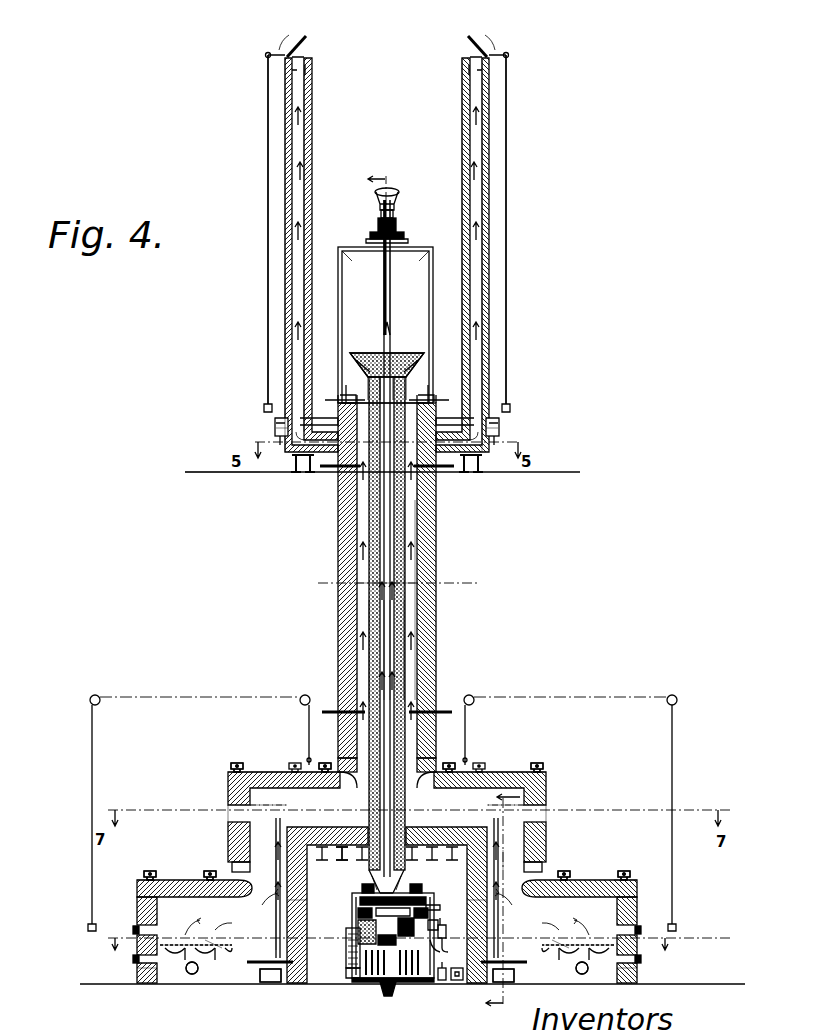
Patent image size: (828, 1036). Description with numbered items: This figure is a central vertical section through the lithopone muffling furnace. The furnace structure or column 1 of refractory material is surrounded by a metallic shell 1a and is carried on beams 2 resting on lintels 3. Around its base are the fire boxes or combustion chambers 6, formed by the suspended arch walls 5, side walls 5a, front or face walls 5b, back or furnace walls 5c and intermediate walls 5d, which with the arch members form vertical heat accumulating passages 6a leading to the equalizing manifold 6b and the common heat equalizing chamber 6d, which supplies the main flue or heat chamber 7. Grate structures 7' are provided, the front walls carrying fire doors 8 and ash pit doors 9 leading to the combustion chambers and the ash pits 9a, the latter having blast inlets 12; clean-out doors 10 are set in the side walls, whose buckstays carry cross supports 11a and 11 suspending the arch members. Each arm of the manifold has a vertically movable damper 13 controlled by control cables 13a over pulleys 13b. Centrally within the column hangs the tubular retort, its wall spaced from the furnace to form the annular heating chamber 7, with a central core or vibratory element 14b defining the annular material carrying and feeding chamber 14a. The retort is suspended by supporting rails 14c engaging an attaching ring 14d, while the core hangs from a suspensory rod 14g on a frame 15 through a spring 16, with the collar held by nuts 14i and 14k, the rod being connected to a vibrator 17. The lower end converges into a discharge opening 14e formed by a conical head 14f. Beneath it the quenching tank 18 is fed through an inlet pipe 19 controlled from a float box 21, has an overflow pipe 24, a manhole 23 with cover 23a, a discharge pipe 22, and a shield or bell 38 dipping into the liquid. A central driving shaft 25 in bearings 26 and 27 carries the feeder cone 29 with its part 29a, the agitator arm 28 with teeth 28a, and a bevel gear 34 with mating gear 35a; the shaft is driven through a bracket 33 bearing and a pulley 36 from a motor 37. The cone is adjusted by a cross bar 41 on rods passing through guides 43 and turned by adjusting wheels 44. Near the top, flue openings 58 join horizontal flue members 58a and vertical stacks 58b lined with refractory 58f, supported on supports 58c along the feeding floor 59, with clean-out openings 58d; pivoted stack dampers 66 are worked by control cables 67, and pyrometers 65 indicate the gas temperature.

The pivoted stack damper 66 is at (296, 40).
The control cable 67 is at (268, 190).
The stack 58b is at (287, 262).
The refractory lining 58f is at (304, 300).
The clean-out opening 58d is at (277, 420).
The stack support 58c is at (276, 430).
The horizontal flue member 58a is at (478, 468).
The flue opening 58 is at (398, 413).
The feeding floor 59 is at (194, 472).
The pyrometer 65 is at (320, 482).
The furnace structure or column 1 is at (437, 531).
The metallic shell 1a is at (437, 606).
The main flue or heat chamber 7 is at (446, 600).
The fire box or combustion chamber 6 is at (318, 583).
The core or vibratory element 14b is at (393, 627).
The annular material carrying and feeding chamber 14a is at (405, 665).
The supporting frame 15 is at (340, 276).
The suspensory element or rod 14g is at (390, 289).
The vibrator 17 is at (393, 200).
The nut 14i is at (396, 222).
The nut 14k is at (379, 230).
The resilient element or spring 16 is at (394, 241).
The discharge opening 14e is at (385, 619).
The attaching ring 14d is at (368, 370).
The supporting rails or beams 14c is at (406, 384).
The lintel 3 is at (433, 596).
The clean-out door 10 is at (228, 802).
The suspended arch wall 5 is at (270, 771).
The side wall 5a is at (160, 888).
The front or face wall 5b is at (147, 985).
The back or furnace wall 5c is at (292, 920).
The intermediate or front wall 5d is at (240, 822).
The heat accumulating chamber or passage 6a is at (232, 866).
The equalizing chamber or manifold 6b is at (387, 806).
The heat equalizing chamber or manifold 6d is at (292, 968).
The fire door 8 is at (135, 930).
The grate structure 7' is at (413, 965).
The ash pit door 9 is at (137, 970).
The ash pit 9a is at (200, 962).
The blast inlet 12 is at (192, 976).
The manhole 23 is at (264, 983).
The cross support 11a is at (237, 764).
The bolt 11 is at (325, 764).
The pulley 13b is at (93, 696).
The control cable 13a is at (92, 748).
The damper 13 is at (306, 760).
The beam 2 is at (509, 854).
The feeder cone 29 is at (396, 884).
The cross bar 41 is at (430, 896).
The inlet pipe 19 is at (360, 900).
The float box or tank 21 is at (358, 914).
The adjusting wheel 44 is at (378, 908).
The guide 43 is at (422, 886).
The shield or bell 38 is at (426, 904).
The overflow pipe 24 is at (432, 915).
The quenching tub or tank 18 is at (438, 925).
The valve 29a is at (422, 924).
The bearing 27 is at (358, 940).
The manhole cover 23a is at (346, 956).
The agitator arm 28 is at (346, 975).
The central vertical driving shaft 25 is at (378, 946).
The bevel gear 34 is at (376, 962).
The bearing bracket 33 is at (419, 962).
The pulley 36 is at (452, 935).
The pipe 35a is at (449, 950).
The central bearing 26 is at (372, 982).
The discharge pipe 22 is at (388, 998).
The agitator teeth 28a is at (440, 982).
The motor 37 is at (457, 982).
The conical shaped head 14f is at (332, 866).